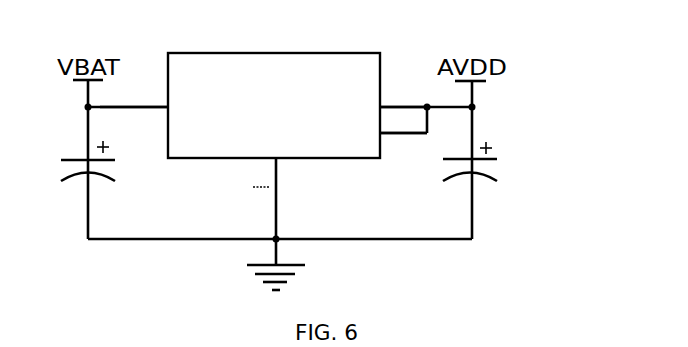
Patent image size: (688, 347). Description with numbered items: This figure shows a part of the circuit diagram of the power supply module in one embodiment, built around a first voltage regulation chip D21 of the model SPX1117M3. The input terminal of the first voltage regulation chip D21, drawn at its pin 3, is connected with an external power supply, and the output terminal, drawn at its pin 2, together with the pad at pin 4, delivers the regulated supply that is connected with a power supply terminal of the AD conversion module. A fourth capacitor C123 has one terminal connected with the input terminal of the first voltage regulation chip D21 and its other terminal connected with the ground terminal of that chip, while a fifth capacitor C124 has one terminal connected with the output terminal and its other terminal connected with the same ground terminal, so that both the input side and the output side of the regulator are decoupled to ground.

The first voltage regulation chip D21 is at (274, 80).
The fourth capacitor C123 is at (124, 163).
The fifth capacitor C124 is at (520, 161).
The regulator pin 2 (VOUT) 2 is at (403, 95).
The regulator pin 3 (VIN) 3 is at (134, 94).
The regulator pin 4 (PAD) 4 is at (403, 121).